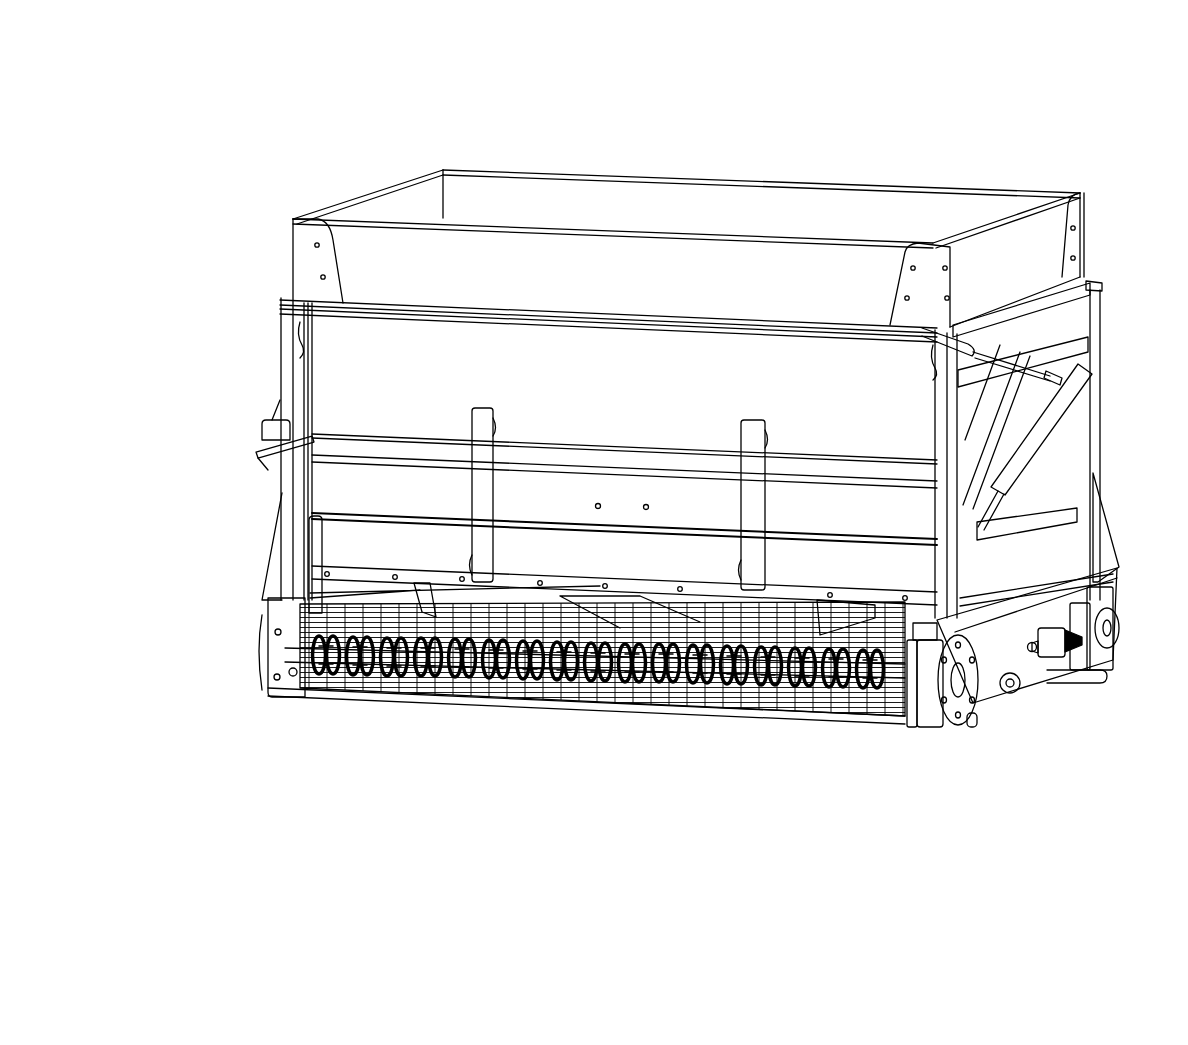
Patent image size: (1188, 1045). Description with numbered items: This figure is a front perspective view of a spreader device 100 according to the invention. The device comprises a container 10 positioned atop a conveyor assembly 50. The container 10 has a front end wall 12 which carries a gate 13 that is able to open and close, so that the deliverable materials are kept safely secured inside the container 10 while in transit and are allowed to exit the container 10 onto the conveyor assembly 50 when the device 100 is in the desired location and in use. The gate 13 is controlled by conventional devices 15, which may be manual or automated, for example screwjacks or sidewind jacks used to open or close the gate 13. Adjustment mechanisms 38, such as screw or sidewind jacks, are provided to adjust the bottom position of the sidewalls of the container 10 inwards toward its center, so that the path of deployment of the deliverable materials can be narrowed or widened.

The spreader device 100 is at (915, 106).
The container 10 is at (626, 387).
The front end wall 12 is at (334, 376).
The conventional devices 15 is at (478, 490).
The gate 13 is at (308, 573).
The adjustment mechanisms 38 is at (256, 440).
The conveyor assembly 50 is at (333, 668).